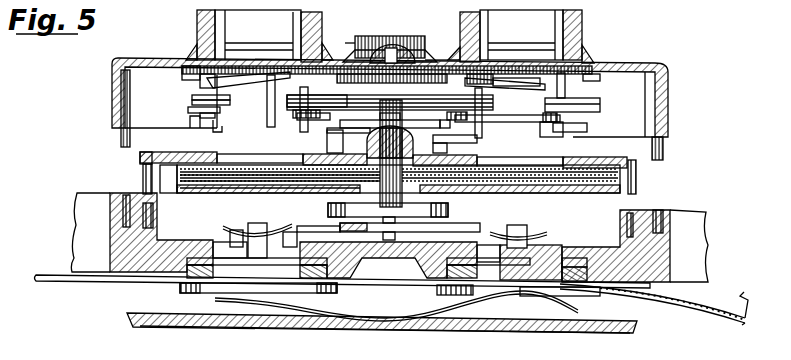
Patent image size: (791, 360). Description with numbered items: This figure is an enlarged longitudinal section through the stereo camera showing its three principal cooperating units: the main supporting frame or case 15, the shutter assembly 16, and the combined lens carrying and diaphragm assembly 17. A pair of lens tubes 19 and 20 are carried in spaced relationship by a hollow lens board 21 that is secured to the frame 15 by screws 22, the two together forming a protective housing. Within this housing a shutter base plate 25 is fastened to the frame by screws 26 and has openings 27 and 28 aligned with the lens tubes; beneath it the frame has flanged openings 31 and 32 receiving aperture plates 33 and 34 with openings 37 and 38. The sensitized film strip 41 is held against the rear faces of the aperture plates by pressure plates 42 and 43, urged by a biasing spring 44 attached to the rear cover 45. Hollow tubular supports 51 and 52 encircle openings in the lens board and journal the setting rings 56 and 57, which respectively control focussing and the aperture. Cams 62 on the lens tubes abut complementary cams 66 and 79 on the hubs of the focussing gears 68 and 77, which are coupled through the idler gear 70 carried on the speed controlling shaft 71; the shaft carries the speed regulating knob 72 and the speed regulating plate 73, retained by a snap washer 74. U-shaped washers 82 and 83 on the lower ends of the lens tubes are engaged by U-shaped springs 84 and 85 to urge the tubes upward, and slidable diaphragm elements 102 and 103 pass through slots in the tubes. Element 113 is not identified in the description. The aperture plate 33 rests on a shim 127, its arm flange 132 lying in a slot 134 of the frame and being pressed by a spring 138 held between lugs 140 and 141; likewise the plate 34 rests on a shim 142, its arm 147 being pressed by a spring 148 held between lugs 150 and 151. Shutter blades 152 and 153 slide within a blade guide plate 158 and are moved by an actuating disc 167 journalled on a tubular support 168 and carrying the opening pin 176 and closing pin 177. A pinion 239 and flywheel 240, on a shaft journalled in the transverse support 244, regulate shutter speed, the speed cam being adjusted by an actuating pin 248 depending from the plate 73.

The main supporting frame 15 is at (118, 235).
The shutter assembly 16 is at (650, 192).
The combined lens carrying and diaphragm assembly 17 is at (414, 89).
The lens tube 19 is at (217, 132).
The lens tube 20 is at (542, 132).
The hollow lens board 21 is at (596, 64).
The screws 22 is at (120, 130).
The shutter base plate 25 is at (140, 157).
The screws 26 is at (143, 172).
The opening 27 is at (229, 158).
The opening 28 is at (554, 160).
The flanged opening 31 is at (300, 270).
The flanged opening 32 is at (477, 272).
The aperture plate 33 is at (185, 290).
The aperture plate 34 is at (600, 290).
The opening 37 is at (222, 275).
The opening 38 is at (553, 278).
The sensitized film strip 41 is at (718, 315).
The pressure plate 42 is at (248, 297).
The pressure plate 43 is at (570, 296).
The biasing spring 44 is at (325, 326).
The rear cover 45 is at (378, 328).
The hollow tubular support 51 is at (197, 26).
The hollow tubular support 52 is at (582, 22).
The setting ring 56 is at (188, 50).
The setting ring 57 is at (590, 50).
The cam 62 is at (225, 84).
The cam 66 is at (490, 78).
The focussing gear 68 is at (597, 76).
The intermediate idler gear 70 is at (375, 36).
The speed controlling shaft 71 is at (401, 46).
The shutter speed regulating knob 72 is at (355, 46).
The speed regulating plate 73 is at (417, 83).
The snap washer 74 is at (400, 93).
The focussing gear 77 is at (185, 70).
The cam 79 is at (205, 78).
The U-shaped fitting washer 82 is at (190, 110).
The U-shaped fitting washer 83 is at (598, 108).
The U-shaped spring 84 is at (190, 122).
The U-shaped spring 85 is at (590, 127).
The slidable diaphragm element 102 is at (192, 97).
The slidable diaphragm element 103 is at (192, 102).
The plate 113 is at (517, 118).
The shim 127 is at (160, 283).
The flanged upper end 132 is at (262, 226).
The slot 134 is at (260, 240).
The spring 138 is at (230, 228).
The lug 140 is at (230, 234).
The lug 141 is at (298, 230).
The shim 142 is at (578, 260).
The lateral arm 147 is at (470, 250).
The spring 148 is at (510, 232).
The lug 150 is at (478, 232).
The lug 151 is at (547, 236).
The shutter blade 152 is at (240, 185).
The shutter blade 153 is at (255, 184).
The blade guide plate 158 is at (165, 193).
The shutter actuating disc 167 is at (345, 140).
The hollow tubular support 168 is at (388, 130).
The beveled opening pin 176 is at (445, 137).
The closing pin 177 is at (327, 137).
The pinion 239 is at (450, 204).
The flywheel 240 is at (410, 122).
The transverse support 244 is at (372, 237).
The actuating pin 248 is at (287, 100).